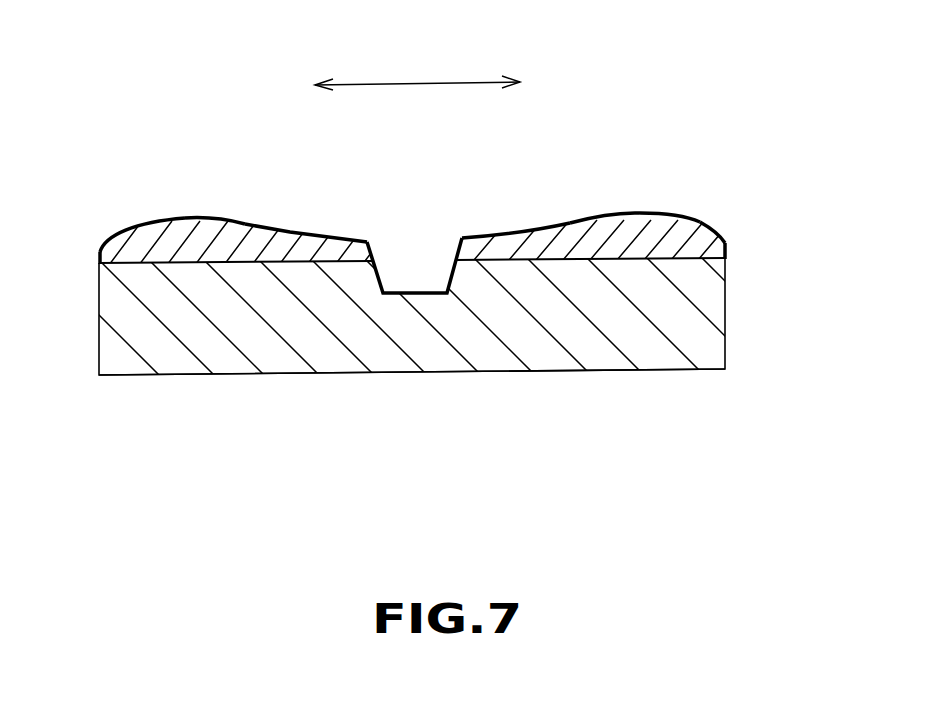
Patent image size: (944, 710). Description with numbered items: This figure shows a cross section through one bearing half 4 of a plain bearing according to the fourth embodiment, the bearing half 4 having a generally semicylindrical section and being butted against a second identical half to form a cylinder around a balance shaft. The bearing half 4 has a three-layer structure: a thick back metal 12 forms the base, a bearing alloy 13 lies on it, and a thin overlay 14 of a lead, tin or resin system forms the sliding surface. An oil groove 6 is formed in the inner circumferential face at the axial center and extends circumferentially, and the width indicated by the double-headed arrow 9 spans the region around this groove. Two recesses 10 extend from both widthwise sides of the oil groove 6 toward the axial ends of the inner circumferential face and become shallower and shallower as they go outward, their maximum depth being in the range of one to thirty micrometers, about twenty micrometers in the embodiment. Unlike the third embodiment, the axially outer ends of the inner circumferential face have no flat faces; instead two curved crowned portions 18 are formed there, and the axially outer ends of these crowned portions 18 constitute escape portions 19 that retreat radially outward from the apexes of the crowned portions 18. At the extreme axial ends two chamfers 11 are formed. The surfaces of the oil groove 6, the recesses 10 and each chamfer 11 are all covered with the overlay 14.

The bearing half 4 is at (565, 373).
The oil groove 6 is at (418, 283).
The width of track region 9 is at (414, 83).
The recess 10 is at (320, 233).
The chamfer 11 is at (100, 240).
The back metal 12 is at (708, 347).
The bearing alloy 13 is at (680, 245).
The overlay 14 is at (627, 213).
The crowned portion 18 is at (200, 217).
The escape portion 19 is at (133, 225).